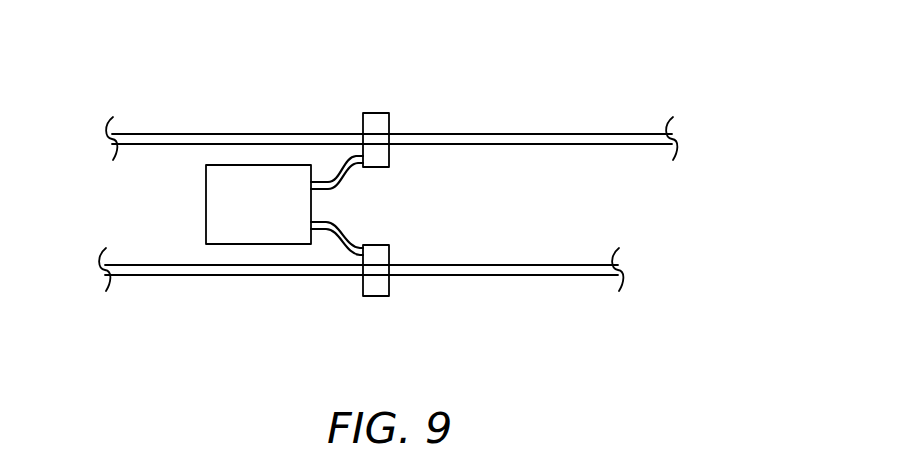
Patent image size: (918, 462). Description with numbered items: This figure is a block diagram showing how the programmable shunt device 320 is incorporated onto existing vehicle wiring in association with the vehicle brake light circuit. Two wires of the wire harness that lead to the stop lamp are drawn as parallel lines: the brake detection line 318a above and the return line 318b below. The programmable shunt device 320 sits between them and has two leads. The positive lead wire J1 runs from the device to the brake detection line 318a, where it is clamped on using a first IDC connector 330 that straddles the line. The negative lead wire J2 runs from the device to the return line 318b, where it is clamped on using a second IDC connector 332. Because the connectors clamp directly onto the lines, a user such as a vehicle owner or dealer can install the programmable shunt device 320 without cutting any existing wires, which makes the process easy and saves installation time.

The brake detection line 318a is at (193, 133).
The return line 318b is at (178, 277).
The programmable shunt device 320 is at (278, 217).
The first IDC connector 330 is at (375, 113).
The second IDC connector 332 is at (375, 297).
The positive lead wire J1 is at (345, 174).
The negative lead wire J2 is at (347, 236).